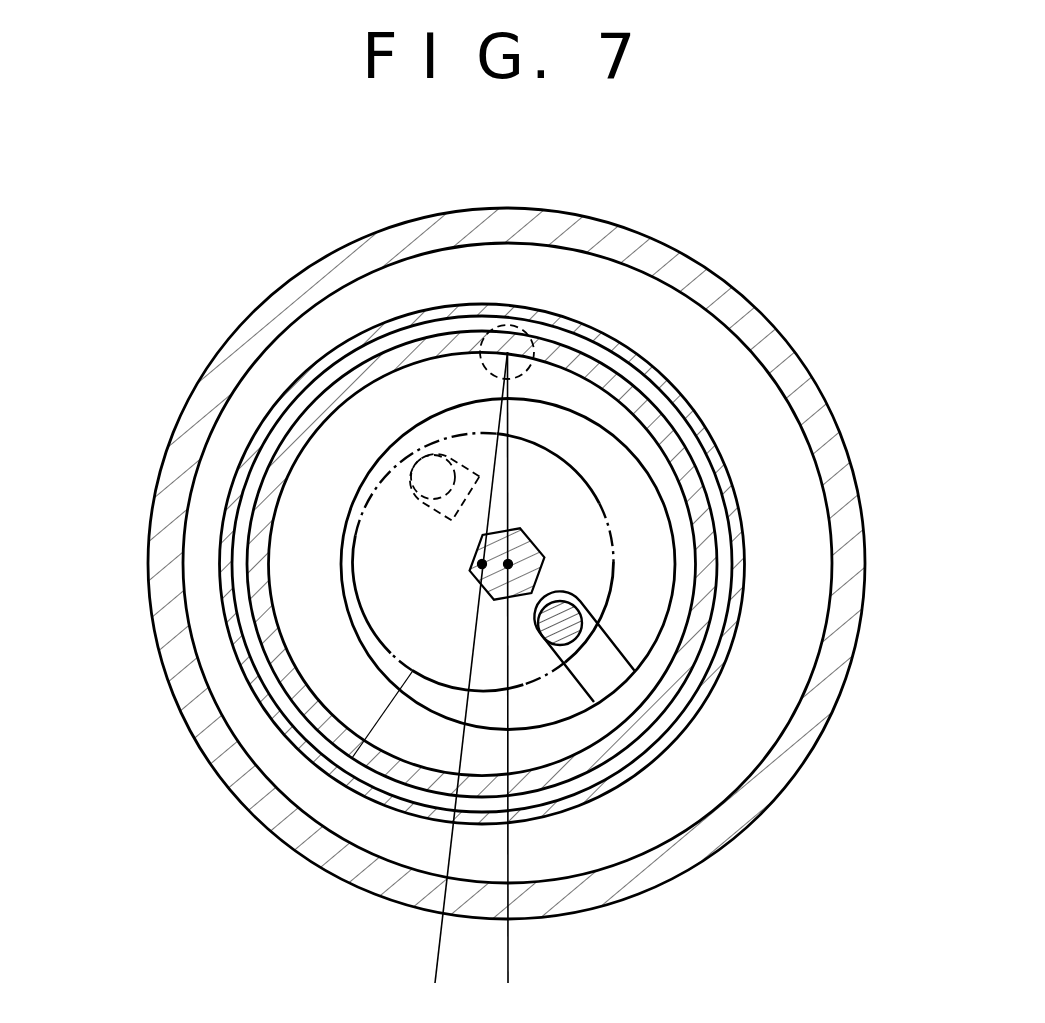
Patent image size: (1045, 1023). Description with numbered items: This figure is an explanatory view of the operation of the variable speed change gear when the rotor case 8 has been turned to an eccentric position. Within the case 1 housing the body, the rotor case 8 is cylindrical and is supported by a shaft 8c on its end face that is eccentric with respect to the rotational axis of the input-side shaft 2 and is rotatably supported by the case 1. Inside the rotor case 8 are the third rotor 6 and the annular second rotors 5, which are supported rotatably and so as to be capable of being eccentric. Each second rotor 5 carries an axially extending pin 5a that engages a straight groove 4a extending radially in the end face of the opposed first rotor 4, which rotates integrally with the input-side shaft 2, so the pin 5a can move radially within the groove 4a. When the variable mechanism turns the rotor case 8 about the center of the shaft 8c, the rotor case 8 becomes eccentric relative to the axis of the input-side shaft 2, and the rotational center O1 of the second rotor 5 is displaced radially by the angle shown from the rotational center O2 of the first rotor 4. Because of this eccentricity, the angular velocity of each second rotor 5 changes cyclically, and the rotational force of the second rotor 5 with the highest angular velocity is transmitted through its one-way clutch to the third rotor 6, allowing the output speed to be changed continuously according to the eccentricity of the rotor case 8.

The case 1 is at (438, 212).
The input-side shaft 2 is at (547, 568).
The first rotor 4 is at (682, 383).
The straight groove 4a is at (600, 667).
The second rotor 5 is at (320, 777).
The pin 5a is at (572, 621).
The third rotor 6 is at (570, 747).
The rotor case 8 is at (273, 397).
The shaft 8c is at (565, 340).
The rotational center of the second rotor O1 is at (478, 563).
The rotational center of the first rotor O2 is at (510, 561).